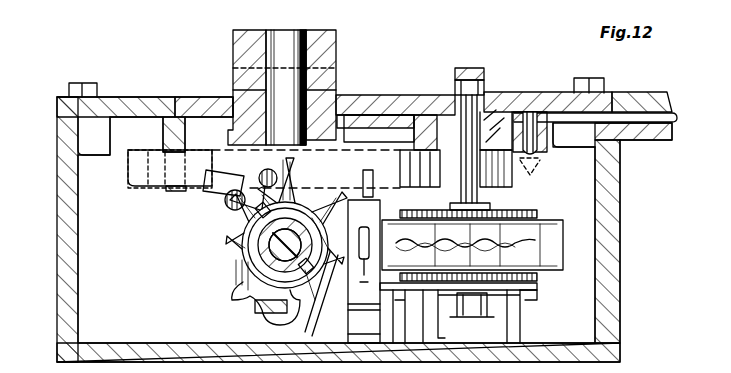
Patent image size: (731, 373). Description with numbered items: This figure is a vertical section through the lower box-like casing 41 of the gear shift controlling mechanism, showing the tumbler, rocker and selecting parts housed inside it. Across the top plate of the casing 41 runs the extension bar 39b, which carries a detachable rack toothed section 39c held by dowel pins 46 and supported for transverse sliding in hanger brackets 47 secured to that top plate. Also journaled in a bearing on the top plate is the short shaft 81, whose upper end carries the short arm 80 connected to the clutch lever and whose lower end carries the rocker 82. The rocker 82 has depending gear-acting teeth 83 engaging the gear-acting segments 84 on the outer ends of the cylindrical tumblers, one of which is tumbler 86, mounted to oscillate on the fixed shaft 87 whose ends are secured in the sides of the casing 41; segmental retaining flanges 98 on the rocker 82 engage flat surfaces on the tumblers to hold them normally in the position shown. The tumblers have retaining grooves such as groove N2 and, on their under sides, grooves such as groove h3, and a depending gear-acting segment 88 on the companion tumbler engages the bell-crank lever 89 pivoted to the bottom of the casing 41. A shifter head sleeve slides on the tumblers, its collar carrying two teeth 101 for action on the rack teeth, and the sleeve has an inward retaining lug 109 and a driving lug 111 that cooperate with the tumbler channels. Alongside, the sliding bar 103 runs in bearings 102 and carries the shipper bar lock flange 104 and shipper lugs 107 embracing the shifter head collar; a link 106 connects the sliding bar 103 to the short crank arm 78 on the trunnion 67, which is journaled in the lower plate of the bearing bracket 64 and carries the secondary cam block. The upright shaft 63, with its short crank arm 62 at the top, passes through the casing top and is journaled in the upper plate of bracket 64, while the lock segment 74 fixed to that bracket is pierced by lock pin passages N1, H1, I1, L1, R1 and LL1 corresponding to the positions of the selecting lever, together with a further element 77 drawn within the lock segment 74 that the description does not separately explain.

The casing 41 is at (67, 283).
The short arm 80 is at (285, 87).
The short shaft 81 is at (288, 90).
The rocker 82 is at (362, 130).
The gear-acting segments 84 is at (330, 122).
The segmental retaining flanges 98 is at (410, 112).
The extension bar 39b is at (655, 95).
The rack toothed bar 39c is at (545, 172).
The short crank arm 62 is at (470, 68).
The short upright shaft 63 is at (487, 128).
The gear-acting teeth 83 is at (515, 99).
The dowel pins 46 is at (530, 150).
The hanger brackets 47 is at (168, 192).
The tumbler 86 is at (246, 207).
The depending gear-acting segment 88 is at (215, 142).
The fixed shaft 87 is at (285, 252).
The segmental groove h3 is at (300, 262).
The retaining lug 109 is at (250, 222).
The teeth 101 is at (264, 178).
The retaining groove N2 is at (340, 179).
The shipper bar lock flange 104 is at (366, 182).
The bell-crank lever 89 is at (268, 307).
The driving lug 111 is at (325, 294).
The shipper lugs 107 is at (326, 261).
The sliding bar 103 is at (364, 271).
The bearings 102 is at (364, 319).
The lock segment 74 is at (570, 246).
The bearing 64 is at (538, 204).
The lock pin passage N1 is at (402, 257).
The lock pin passage H1 is at (442, 230).
The lock pin passage L1 is at (489, 230).
The lock pin passage R1 is at (510, 230).
The lock pin passage LL1 is at (541, 245).
The lock pin passage I1 is at (452, 263).
The spring 77 is at (500, 265).
The link 106 is at (458, 313).
The trunnion 67 is at (505, 320).
The short crank arm 78 is at (469, 313).